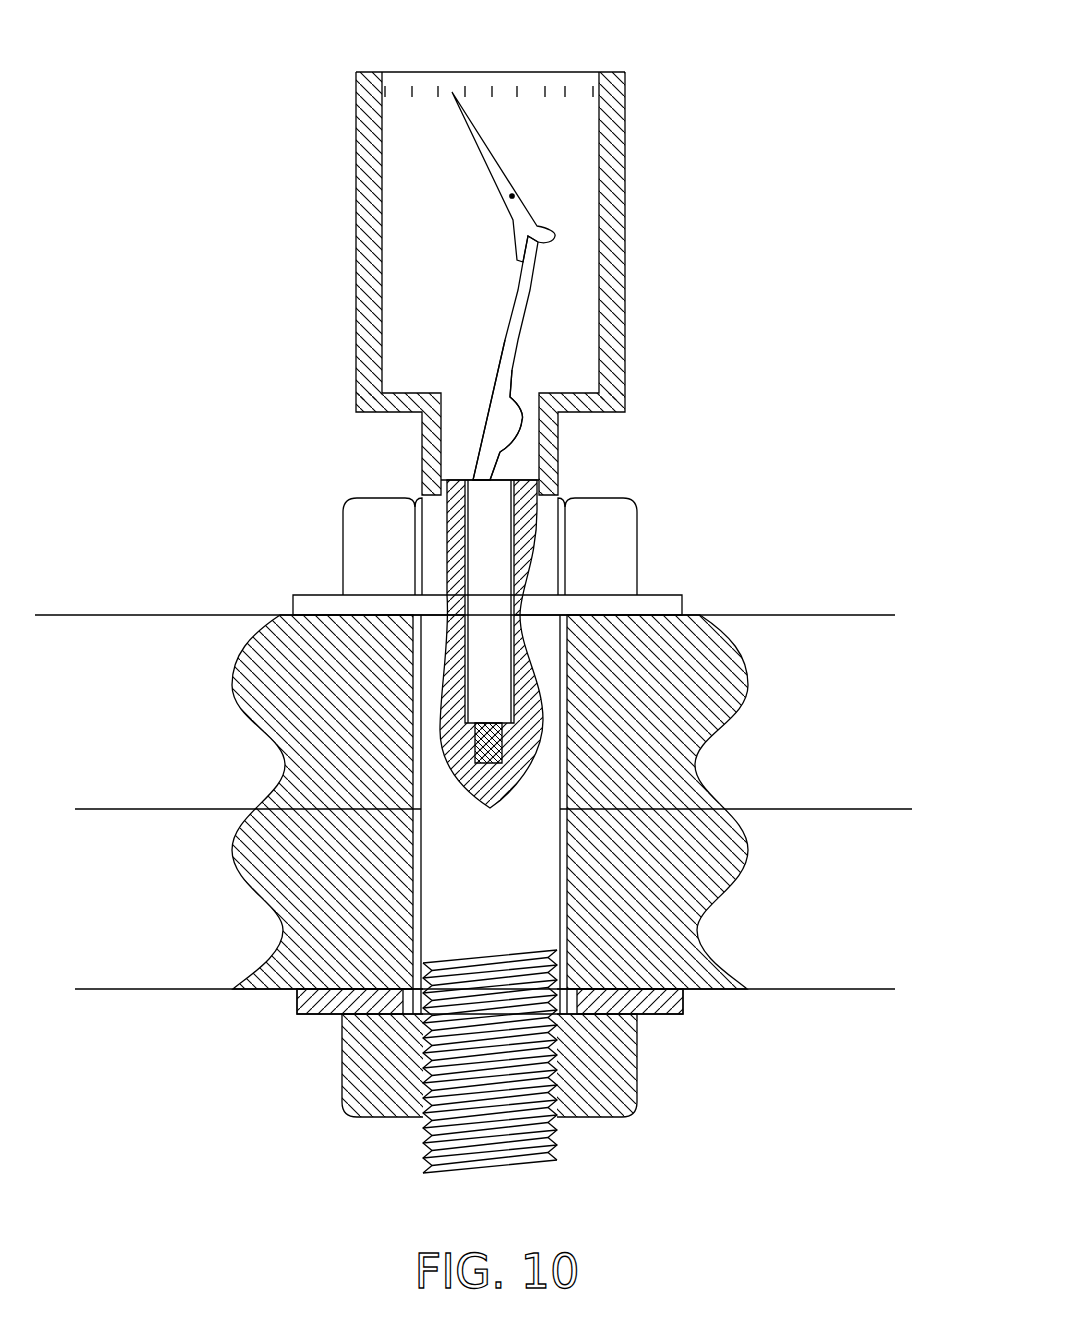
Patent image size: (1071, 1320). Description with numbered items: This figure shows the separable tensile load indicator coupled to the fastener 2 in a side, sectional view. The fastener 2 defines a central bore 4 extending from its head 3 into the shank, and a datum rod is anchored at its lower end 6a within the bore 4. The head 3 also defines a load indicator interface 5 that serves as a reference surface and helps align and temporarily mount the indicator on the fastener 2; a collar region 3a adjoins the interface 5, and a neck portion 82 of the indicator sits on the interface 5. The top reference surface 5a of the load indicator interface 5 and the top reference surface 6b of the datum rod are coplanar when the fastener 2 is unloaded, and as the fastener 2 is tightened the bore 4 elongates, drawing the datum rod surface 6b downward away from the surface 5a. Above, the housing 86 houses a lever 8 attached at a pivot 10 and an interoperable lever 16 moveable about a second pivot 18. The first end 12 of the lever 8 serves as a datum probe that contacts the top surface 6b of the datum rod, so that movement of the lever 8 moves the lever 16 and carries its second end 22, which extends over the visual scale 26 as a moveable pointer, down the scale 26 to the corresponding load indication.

The fastener 2 is at (192, 500).
The head 3 is at (623, 554).
The collar of nut 3a is at (440, 500).
The central bore 4 is at (478, 636).
The load indicator interface 5 is at (558, 487).
The top reference surface 5a is at (403, 498).
The lower end 6a is at (500, 760).
The top reference surface 6b is at (445, 556).
The lever 8 is at (527, 313).
The pivot 10 is at (513, 422).
The first end 12 is at (477, 450).
The lever 16 is at (490, 142).
The second pivot 18 is at (512, 196).
The second end 22 is at (452, 92).
The visual scale 26 is at (412, 90).
The right housing neck 82 is at (560, 463).
The housing 86 is at (628, 132).